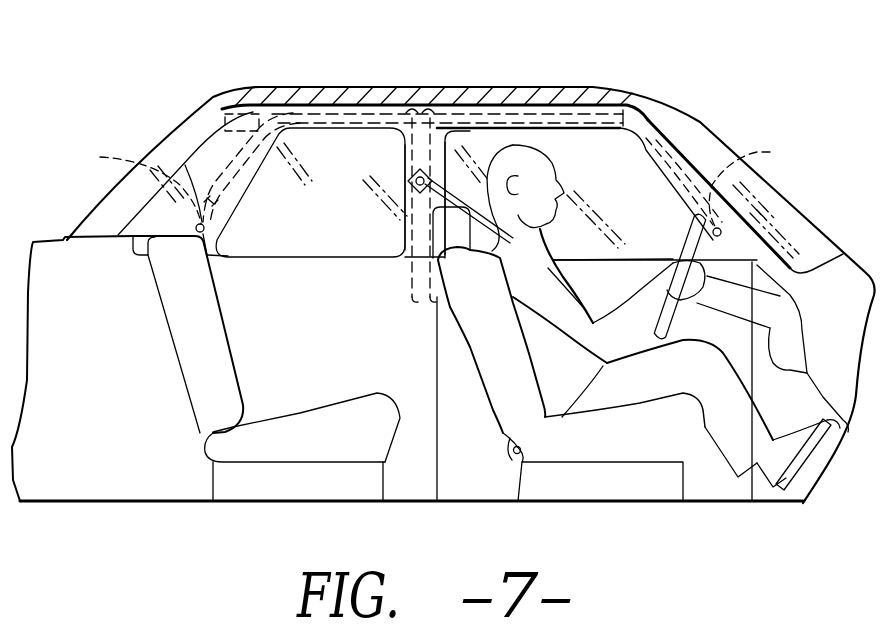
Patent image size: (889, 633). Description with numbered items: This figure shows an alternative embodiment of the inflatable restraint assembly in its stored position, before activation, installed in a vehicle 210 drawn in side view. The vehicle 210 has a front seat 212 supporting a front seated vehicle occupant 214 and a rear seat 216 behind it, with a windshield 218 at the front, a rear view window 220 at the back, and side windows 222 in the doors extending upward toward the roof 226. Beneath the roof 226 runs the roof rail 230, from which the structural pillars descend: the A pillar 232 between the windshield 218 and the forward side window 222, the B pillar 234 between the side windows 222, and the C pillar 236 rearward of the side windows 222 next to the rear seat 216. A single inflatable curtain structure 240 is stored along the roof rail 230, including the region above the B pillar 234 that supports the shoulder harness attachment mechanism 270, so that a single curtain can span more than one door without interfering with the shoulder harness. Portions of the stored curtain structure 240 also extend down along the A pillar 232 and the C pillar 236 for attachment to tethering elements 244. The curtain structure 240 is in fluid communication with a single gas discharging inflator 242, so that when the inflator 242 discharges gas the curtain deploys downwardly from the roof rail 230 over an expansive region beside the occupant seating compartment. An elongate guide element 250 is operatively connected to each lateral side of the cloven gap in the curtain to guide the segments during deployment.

The vehicle 210 is at (697, 78).
The front seat 212 is at (500, 395).
The front seated vehicle occupant 214 is at (517, 153).
The rear seat 216 is at (182, 340).
The windshield 218 is at (703, 128).
The rear view window 220 is at (175, 128).
The side windows 222 is at (368, 242).
The roof 226 is at (267, 88).
The roof rail 230 is at (322, 137).
The A pillar 232 is at (655, 175).
The B pillar 234 is at (405, 237).
The C pillar 236 is at (247, 183).
The inflatable curtain structure 240 is at (567, 113).
The gas discharging inflator 242 is at (247, 87).
The tethering elements 244 is at (434, 183).
The elongate guide element 250 is at (437, 108).
The shoulder harness attachment mechanism 270 is at (420, 177).